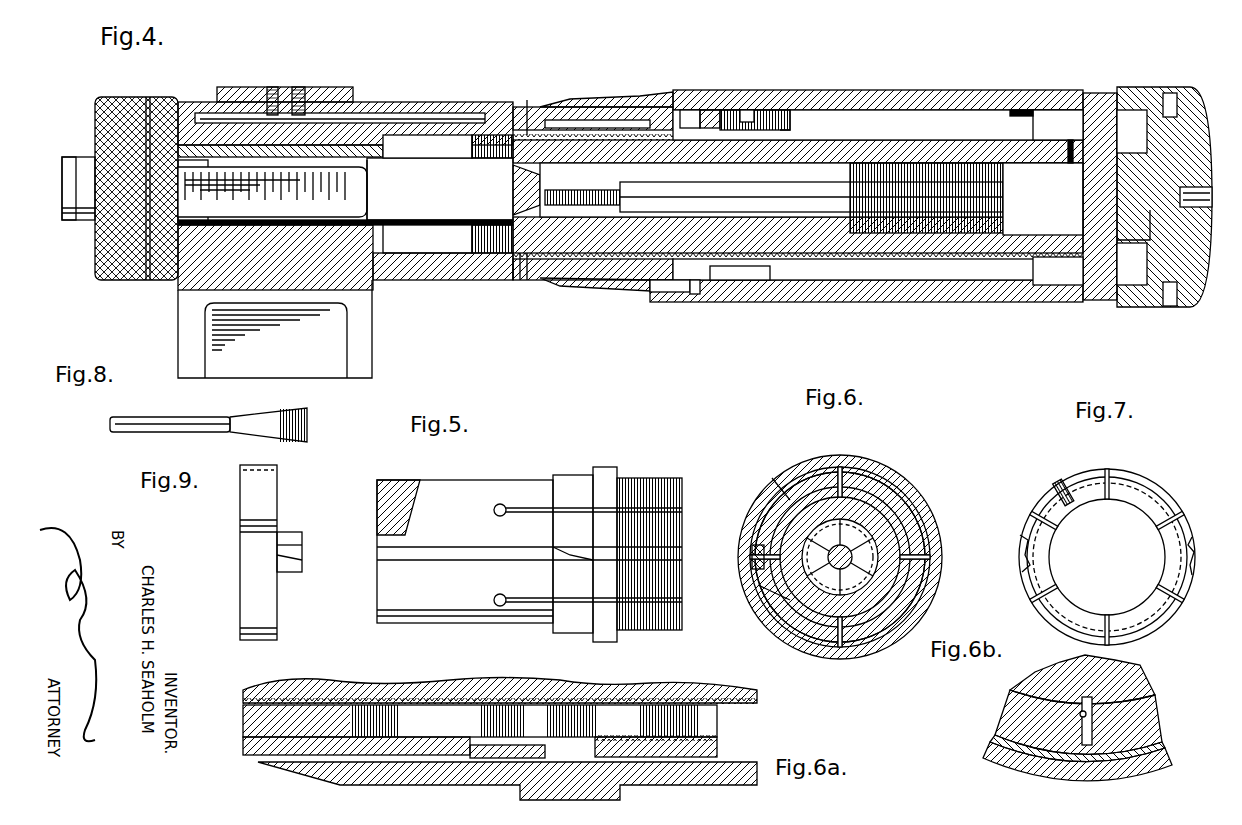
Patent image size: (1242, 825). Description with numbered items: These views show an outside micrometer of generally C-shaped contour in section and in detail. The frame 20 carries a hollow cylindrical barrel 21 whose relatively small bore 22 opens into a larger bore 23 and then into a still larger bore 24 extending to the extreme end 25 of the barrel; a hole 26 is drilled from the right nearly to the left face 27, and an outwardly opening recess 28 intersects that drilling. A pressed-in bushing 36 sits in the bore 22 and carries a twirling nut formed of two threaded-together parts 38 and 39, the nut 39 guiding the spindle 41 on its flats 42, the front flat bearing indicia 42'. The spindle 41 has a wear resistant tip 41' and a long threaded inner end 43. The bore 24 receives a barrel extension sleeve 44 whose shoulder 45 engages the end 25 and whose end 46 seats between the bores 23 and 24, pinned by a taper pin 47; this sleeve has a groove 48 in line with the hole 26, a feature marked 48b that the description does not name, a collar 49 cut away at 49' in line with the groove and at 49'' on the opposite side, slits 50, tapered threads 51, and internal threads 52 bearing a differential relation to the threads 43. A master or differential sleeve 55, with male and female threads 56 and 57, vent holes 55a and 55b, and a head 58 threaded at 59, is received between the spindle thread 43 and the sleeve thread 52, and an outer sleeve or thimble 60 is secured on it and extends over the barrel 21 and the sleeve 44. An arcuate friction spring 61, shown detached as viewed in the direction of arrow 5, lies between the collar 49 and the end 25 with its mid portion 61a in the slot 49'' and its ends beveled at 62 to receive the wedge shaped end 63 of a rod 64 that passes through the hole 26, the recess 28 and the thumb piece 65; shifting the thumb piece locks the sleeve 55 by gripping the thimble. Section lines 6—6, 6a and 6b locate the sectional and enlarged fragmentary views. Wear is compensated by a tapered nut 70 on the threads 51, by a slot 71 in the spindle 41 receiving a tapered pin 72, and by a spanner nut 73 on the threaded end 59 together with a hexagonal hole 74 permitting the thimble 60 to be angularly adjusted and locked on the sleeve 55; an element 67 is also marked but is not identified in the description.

In FIG. 4, the arrow 5 is at (591, 82).
In FIG. 4, the section line 6 is at (670, 331).
In FIG. 5, the section line 6 is at (582, 666).
In FIG. 6A, the section line 6 is at (582, 666).
In FIG. 6, the section line 6a is at (840, 680).
In FIG. 5, the section line 6b is at (500, 666).
In FIG. 6A, the section line 6b is at (500, 801).
In FIG. 4, the body or frame 20 is at (372, 350).
In FIG. 4, the barrel 21 is at (440, 280).
In FIG. 4, the small diameter cylindrical bore 22 is at (370, 145).
In FIG. 4, the larger diameter bore 23 is at (430, 130).
In FIG. 4, the still larger bore 24 is at (527, 135).
In FIG. 4, the extreme end of the barrel 25 is at (635, 96).
In FIG. 6A, the extreme end of the barrel 25 is at (460, 760).
In FIG. 4, the hole 26 is at (505, 130).
In FIG. 4, the left face of the barrel 27 is at (188, 102).
In FIG. 4, the outwardly opening recess 28 is at (237, 113).
In FIG. 4, the bushing 36 is at (375, 222).
In FIG. 4, the collar part of twirling nut 38 is at (160, 97).
In FIG. 4, the nut part of twirling nut 39 is at (135, 97).
In FIG. 4, the spindle 41 is at (78, 170).
In FIG. 6, the spindle 41 is at (882, 543).
In FIG. 4, the wear resistant tip 41' is at (55, 235).
In FIG. 4, the flats 42 is at (279, 147).
In FIG. 4, the indicia 42' is at (337, 192).
In FIG. 4, the threaded inner end 43 is at (520, 190).
In FIG. 6, the threaded inner end 43 is at (878, 557).
In FIG. 4, the barrel extension sleeve 44 is at (480, 253).
In FIG. 5, the barrel extension sleeve 44 is at (486, 634).
In FIG. 6, the barrel extension sleeve 44 is at (890, 548).
In FIG. 7, the barrel extension sleeve 44 is at (1159, 470).
In FIG. 6A, the barrel extension sleeve 44 is at (480, 692).
In FIG. 6B, the barrel extension sleeve 44 is at (1150, 700).
In FIG. 4, the shoulder 45 is at (590, 292).
In FIG. 5, the shoulder 45 is at (555, 630).
In FIG. 6A, the shoulder 45 is at (475, 732).
In FIG. 4, the end of sleeve 46 is at (470, 240).
In FIG. 5, the end of sleeve 46 is at (377, 600).
In FIG. 4, the taper pin 47 is at (512, 265).
In FIG. 4, the groove 48 is at (427, 146).
In FIG. 5, the groove 48 is at (448, 547).
In FIG. 6, the groove 48 is at (752, 552).
In FIG. 7, the groove 48 is at (1025, 592).
In FIG. 4, the slit step 48b is at (792, 128).
In FIG. 5, the collar 49 is at (591, 539).
In FIG. 7, the collar 49 is at (1052, 483).
In FIG. 6A, the collar 49 is at (636, 796).
In FIG. 4, the cut away portion 49' is at (752, 87).
In FIG. 5, the cut away portion 49' is at (573, 541).
In FIG. 7, the cut away portion 49' is at (1010, 553).
In FIG. 4, the slot 49'' is at (697, 318).
In FIG. 7, the slot 49'' is at (1208, 556).
In FIG. 5, the slits 50 is at (682, 508).
In FIG. 6, the slits 50 is at (838, 467).
In FIG. 7, the slits 50 is at (1060, 530).
In FIG. 6A, the slits 50 is at (580, 725).
In FIG. 6B, the slits 50 is at (1082, 714).
In FIG. 4, the tapered threads 51 is at (765, 110).
In FIG. 5, the tapered threads 51 is at (658, 478).
In FIG. 4, the internal threads 52 is at (485, 158).
In FIG. 5, the internal threads 52 is at (380, 505).
In FIG. 6, the internal threads 52 is at (930, 598).
In FIG. 7, the internal threads 52 is at (1132, 510).
In FIG. 4, the master or differential sleeve 55 is at (1000, 260).
In FIG. 6, the master or differential sleeve 55 is at (875, 508).
In FIG. 7, the master or differential sleeve 55 is at (1147, 625).
In FIG. 6A, the master or differential sleeve 55 is at (360, 682).
In FIG. 6B, the master or differential sleeve 55 is at (1125, 675).
In FIG. 4, the vent hole 55a is at (1072, 140).
In FIG. 4, the vent hole 55b is at (1020, 110).
In FIG. 4, the male thread 56 is at (900, 140).
In FIG. 6, the male thread 56 is at (800, 615).
In FIG. 4, the female thread 57 is at (690, 184).
In FIG. 6, the female thread 57 is at (790, 590).
In FIG. 4, the head 58 is at (1095, 275).
In FIG. 4, the threaded end 59 is at (1200, 240).
In FIG. 4, the outer sleeve 60 is at (822, 302).
In FIG. 6, the outer sleeve 60 is at (905, 645).
In FIG. 6A, the outer sleeve 60 is at (275, 768).
In FIG. 6B, the outer sleeve 60 is at (1160, 755).
In FIG. 4, the friction spring 61 is at (640, 292).
In FIG. 9, the friction spring 61 is at (277, 490).
In FIG. 6, the friction spring 61 is at (828, 648).
In FIG. 6A, the friction spring 61 is at (500, 745).
In FIG. 6B, the friction spring 61 is at (1150, 742).
In FIG. 4, the mid portion of spring 61a is at (715, 300).
In FIG. 9, the mid portion of spring 61a is at (302, 550).
In FIG. 4, the beveled ends 62 is at (690, 110).
In FIG. 9, the beveled ends 62 is at (282, 535).
In FIG. 5, the beveled ends 62 is at (724, 611).
In FIG. 6, the beveled ends 62 is at (755, 520).
In FIG. 4, the wedge shaped end 63 is at (712, 110).
In FIG. 8, the wedge shaped end 63 is at (280, 415).
In FIG. 5, the wedge shaped end 63 is at (724, 580).
In FIG. 6, the wedge shaped end 63 is at (770, 575).
In FIG. 4, the rod or pin 64 is at (592, 120).
In FIG. 8, the rod or pin 64 is at (208, 417).
In FIG. 4, the thumb piece 65 is at (330, 87).
In FIG. 4, the shoulder 67 is at (545, 290).
In FIG. 4, the tapered nut 70 is at (772, 274).
In FIG. 6, the tapered nut 70 is at (750, 560).
In FIG. 6A, the tapered nut 70 is at (718, 742).
In FIG. 4, the slot 71 is at (601, 186).
In FIG. 6, the slot 71 is at (812, 500).
In FIG. 4, the tapered pin 72 is at (765, 190).
In FIG. 6, the tapered pin 72 is at (843, 520).
In FIG. 4, the spanner nut 73 is at (1155, 93).
In FIG. 4, the hexagonal hole 74 is at (1214, 187).